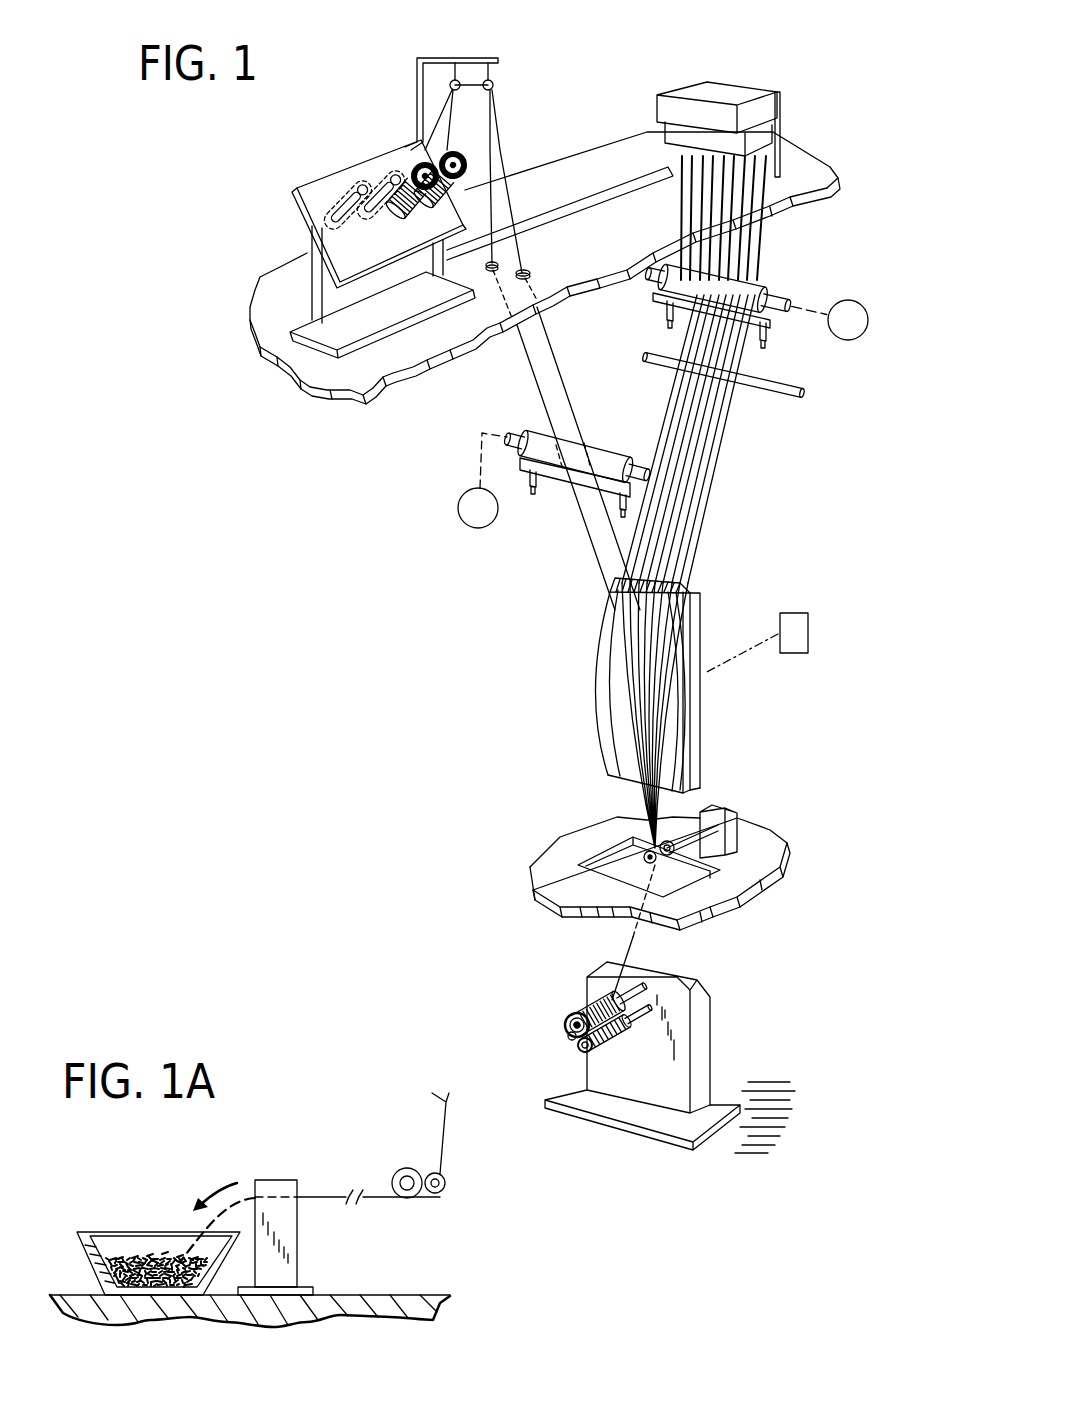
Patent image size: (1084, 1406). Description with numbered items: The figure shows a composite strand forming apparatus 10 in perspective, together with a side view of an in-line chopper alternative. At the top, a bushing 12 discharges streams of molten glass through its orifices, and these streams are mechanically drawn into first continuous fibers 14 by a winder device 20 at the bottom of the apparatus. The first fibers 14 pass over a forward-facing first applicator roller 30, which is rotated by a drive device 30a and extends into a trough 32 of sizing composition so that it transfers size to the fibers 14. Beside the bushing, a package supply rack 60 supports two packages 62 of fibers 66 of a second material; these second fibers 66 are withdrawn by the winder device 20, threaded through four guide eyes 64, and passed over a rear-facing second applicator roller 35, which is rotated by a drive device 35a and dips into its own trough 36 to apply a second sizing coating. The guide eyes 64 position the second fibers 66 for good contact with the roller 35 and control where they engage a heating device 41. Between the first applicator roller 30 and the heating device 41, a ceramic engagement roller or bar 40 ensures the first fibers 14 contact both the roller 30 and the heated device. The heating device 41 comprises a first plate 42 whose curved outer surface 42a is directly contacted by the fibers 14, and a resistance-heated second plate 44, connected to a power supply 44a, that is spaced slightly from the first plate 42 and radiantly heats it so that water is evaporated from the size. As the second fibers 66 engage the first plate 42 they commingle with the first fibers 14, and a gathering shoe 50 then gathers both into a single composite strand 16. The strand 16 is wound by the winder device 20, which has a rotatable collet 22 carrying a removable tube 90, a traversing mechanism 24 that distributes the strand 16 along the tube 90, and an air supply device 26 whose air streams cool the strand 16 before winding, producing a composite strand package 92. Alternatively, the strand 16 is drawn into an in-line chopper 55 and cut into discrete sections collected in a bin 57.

In FIG. 1, the composite strand forming apparatus 10 is at (790, 84).
In FIG. 1, the bushing 12 is at (756, 138).
In FIG. 1, the first continuous fibers 14 is at (693, 457).
In FIG. 1, the composite strand 16 is at (633, 937).
In FIG. 1A, the composite strand 16 is at (435, 1128).
In FIG. 1, the winder device 20 is at (551, 998).
In FIG. 1, the collet 22 is at (567, 1015).
In FIG. 1, the traversing mechanism 24 is at (585, 1053).
In FIG. 1, the air supply device 26 is at (633, 1020).
In FIG. 1, the first applicator roller 30 is at (754, 290).
In FIG. 1, the drive device 30a is at (830, 298).
In FIG. 1, the trough 32 is at (770, 320).
In FIG. 1, the second applicator roller 35 is at (548, 437).
In FIG. 1, the drive device 35a is at (457, 503).
In FIG. 1, the trough 36 is at (558, 473).
In FIG. 1, the engagement roller or bar 40 is at (662, 360).
In FIG. 1, the heating device 41 is at (735, 603).
In FIG. 1, the first plate 42 is at (591, 685).
In FIG. 1, the curved outer surface 42a is at (596, 710).
In FIG. 1, the second plate 44 is at (702, 592).
In FIG. 1, the power supply 44a is at (795, 654).
In FIG. 1, the gathering shoe 50 is at (750, 872).
In FIG. 1A, the in-line chopper 55 is at (275, 1180).
In FIG. 1A, the bin 57 is at (90, 1262).
In FIG. 1, the package supply rack 60 is at (318, 186).
In FIG. 1, the packages 62 is at (418, 152).
In FIG. 1, the guide eyes 64 is at (493, 84).
In FIG. 1, the second material fibers 66 is at (560, 360).
In FIG. 1, the tube 90 is at (570, 1035).
In FIG. 1, the composite strand package 92 is at (583, 1010).